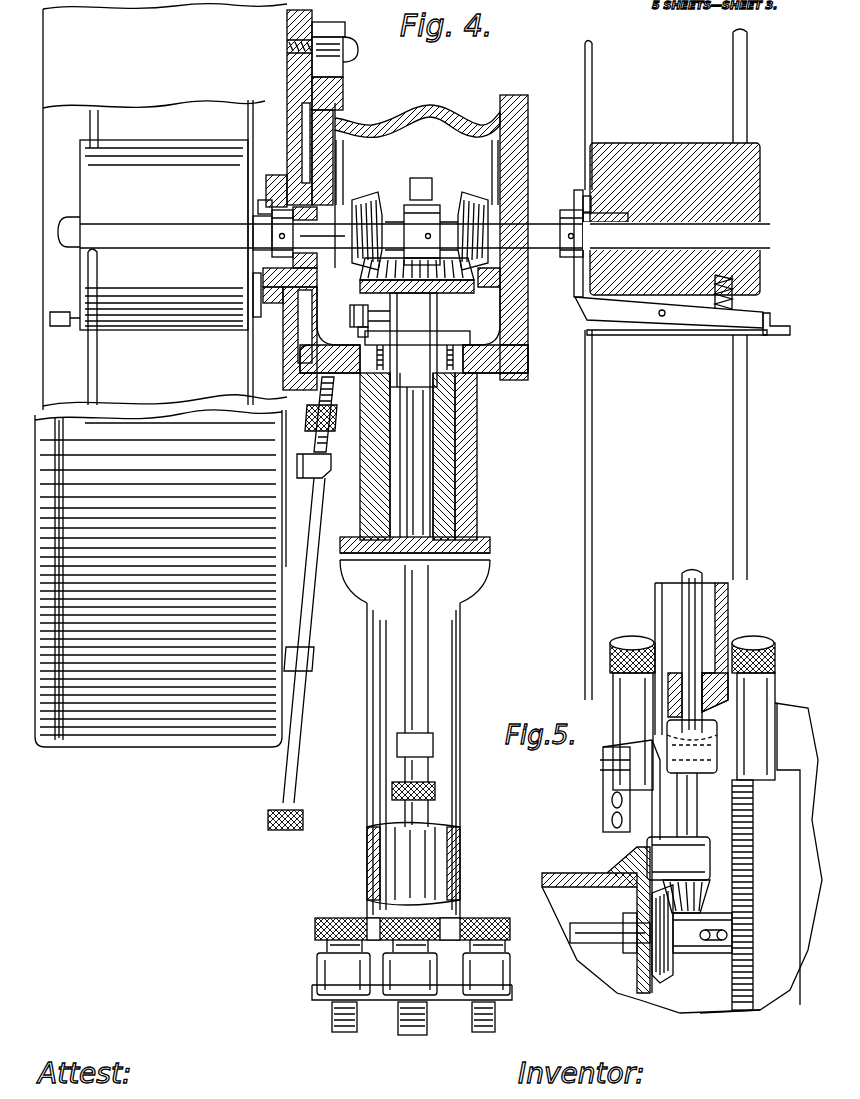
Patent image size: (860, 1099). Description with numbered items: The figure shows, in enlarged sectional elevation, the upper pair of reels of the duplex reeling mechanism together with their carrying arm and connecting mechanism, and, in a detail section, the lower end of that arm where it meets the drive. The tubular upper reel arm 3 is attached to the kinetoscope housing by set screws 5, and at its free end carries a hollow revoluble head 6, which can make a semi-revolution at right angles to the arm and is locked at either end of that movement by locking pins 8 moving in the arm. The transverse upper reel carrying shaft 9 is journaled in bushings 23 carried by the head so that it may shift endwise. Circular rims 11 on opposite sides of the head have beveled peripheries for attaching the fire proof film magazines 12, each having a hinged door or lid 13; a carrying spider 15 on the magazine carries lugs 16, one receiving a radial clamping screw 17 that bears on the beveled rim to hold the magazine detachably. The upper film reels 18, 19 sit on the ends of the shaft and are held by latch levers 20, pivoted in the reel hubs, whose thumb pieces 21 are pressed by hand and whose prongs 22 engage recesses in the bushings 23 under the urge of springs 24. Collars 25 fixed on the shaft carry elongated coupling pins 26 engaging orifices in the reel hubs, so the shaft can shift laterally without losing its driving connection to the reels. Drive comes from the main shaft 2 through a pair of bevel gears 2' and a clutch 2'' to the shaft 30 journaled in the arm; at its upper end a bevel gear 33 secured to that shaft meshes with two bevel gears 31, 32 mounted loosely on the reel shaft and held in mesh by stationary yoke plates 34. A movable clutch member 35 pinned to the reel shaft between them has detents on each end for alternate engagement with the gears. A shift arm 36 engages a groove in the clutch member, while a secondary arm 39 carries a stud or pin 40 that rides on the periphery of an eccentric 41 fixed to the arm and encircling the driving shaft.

In FIG. 5, the main shaft 2 is at (610, 925).
In FIG. 5, the bevel gears 2' is at (711, 895).
In FIG. 5, the clutch 2'' is at (702, 952).
In FIG. 4, the upper reel arm 3 is at (462, 801).
In FIG. 5, the upper reel arm 3 is at (655, 606).
In FIG. 4, the set screws 5 is at (315, 927).
In FIG. 5, the set screws 5 is at (775, 663).
In FIG. 4, the hollow revoluble head 6 is at (477, 420).
In FIG. 4, the locking pins 8 is at (420, 648).
In FIG. 4, the upper reel carrying shaft 9 is at (68, 224).
In FIG. 4, the circular rims 11 is at (340, 110).
In FIG. 4, the film magazines 12 is at (165, 207).
In FIG. 4, the hinged door or lid 13 is at (62, 462).
In FIG. 4, the carrying spiders 15 is at (305, 497).
In FIG. 4, the lugs 16 is at (326, 37).
In FIG. 4, the radial clamping screw 17 is at (310, 588).
In FIG. 4, the upper film reel 18 is at (148, 330).
In FIG. 4, the upper film reel 19 is at (682, 150).
In FIG. 4, the latch levers 20 is at (677, 320).
In FIG. 4, the thumb pieces 21 is at (66, 318).
In FIG. 4, the prongs 22 is at (253, 292).
In FIG. 4, the bushings 23 is at (258, 200).
In FIG. 4, the springs 24 is at (734, 290).
In FIG. 4, the collars 25 is at (272, 236).
In FIG. 4, the elongated coupling pins 26 is at (258, 212).
In FIG. 4, the shaft 30 is at (433, 463).
In FIG. 5, the shaft 30 is at (703, 613).
In FIG. 4, the bevel gear 31 is at (371, 200).
In FIG. 4, the bevel gear 32 is at (474, 200).
In FIG. 4, the bevel gear 33 is at (452, 290).
In FIG. 4, the yoke plates 34 is at (344, 153).
In FIG. 4, the movable clutch member 35 is at (408, 212).
In FIG. 4, the shift arm 36 is at (426, 178).
In FIG. 4, the secondary arm 39 is at (350, 316).
In FIG. 4, the stud or pin 40 is at (358, 334).
In FIG. 4, the eccentric 41 is at (470, 338).